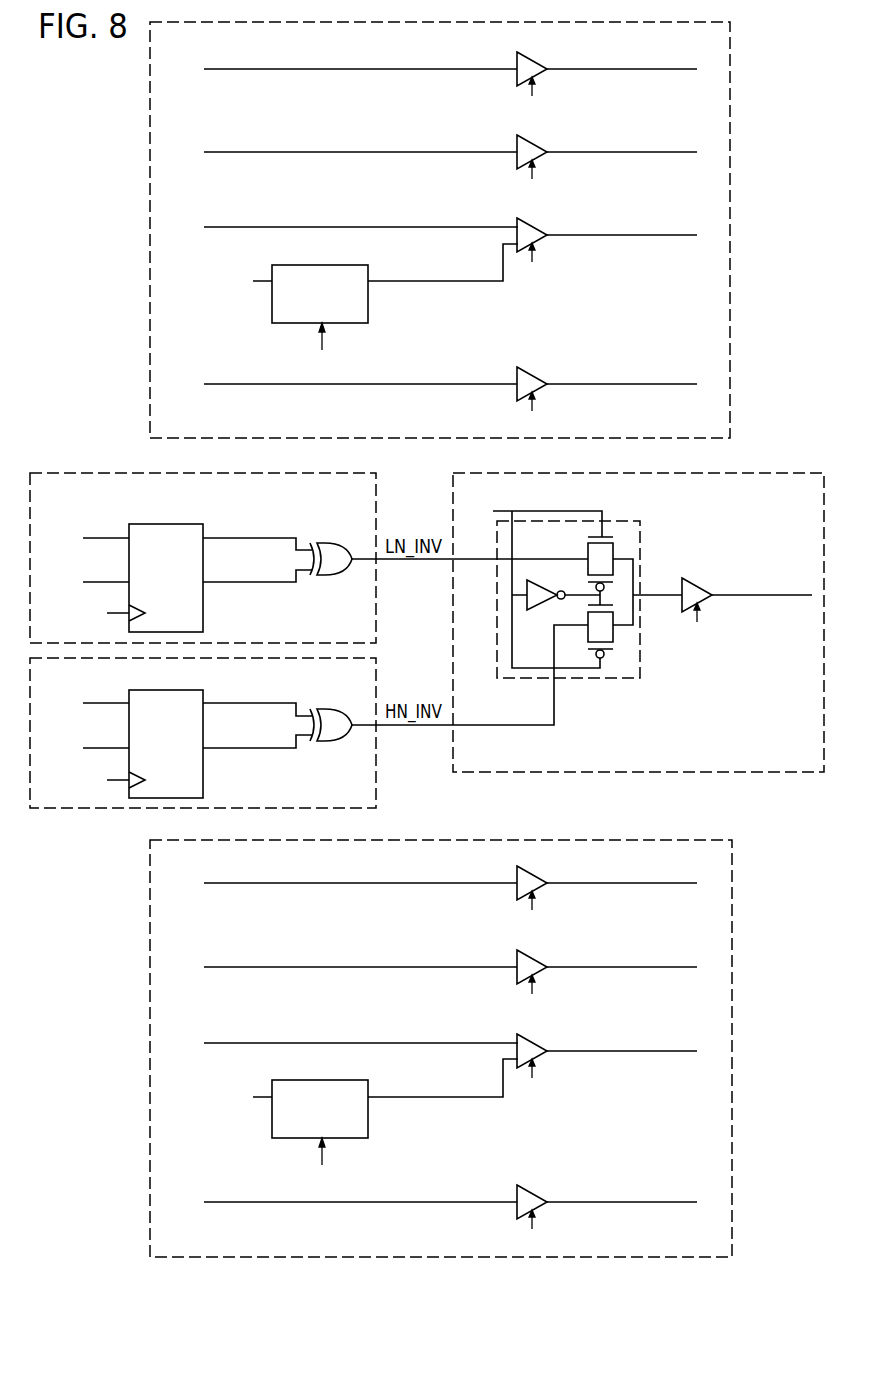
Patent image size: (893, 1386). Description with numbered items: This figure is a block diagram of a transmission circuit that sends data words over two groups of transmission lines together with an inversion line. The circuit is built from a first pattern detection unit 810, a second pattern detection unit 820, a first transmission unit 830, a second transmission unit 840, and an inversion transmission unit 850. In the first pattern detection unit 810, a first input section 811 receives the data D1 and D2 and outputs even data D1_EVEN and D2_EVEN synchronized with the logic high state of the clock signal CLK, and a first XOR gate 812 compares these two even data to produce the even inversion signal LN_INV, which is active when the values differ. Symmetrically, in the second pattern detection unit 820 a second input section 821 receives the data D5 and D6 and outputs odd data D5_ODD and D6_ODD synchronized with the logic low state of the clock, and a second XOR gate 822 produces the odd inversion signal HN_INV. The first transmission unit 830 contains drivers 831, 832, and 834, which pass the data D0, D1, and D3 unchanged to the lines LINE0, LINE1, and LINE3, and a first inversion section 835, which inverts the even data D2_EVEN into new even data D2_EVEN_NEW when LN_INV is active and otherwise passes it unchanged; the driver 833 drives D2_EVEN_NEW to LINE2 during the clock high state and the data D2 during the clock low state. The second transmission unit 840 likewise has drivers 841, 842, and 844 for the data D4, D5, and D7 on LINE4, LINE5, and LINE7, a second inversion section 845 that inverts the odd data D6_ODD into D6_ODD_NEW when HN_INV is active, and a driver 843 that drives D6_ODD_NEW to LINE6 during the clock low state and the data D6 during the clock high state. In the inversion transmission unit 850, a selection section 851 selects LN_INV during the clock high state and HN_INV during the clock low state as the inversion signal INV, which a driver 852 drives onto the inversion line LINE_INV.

The first pattern detection unit 810 is at (337, 473).
The first input section 811 is at (158, 524).
The first XOR gate 812 is at (330, 548).
The second pattern detection unit 820 is at (337, 808).
The second input section 821 is at (158, 690).
The second XOR gate 822 is at (330, 714).
The first transmission unit 830 is at (683, 22).
The driver 831 is at (532, 56).
The driver 832 is at (532, 139).
The driver 833 is at (532, 222).
The driver 834 is at (532, 371).
The first inversion section 835 is at (317, 265).
The second transmission unit 840 is at (685, 840).
The driver 841 is at (532, 870).
The driver 842 is at (532, 954).
The driver 843 is at (532, 1038).
The driver 844 is at (532, 1189).
The second inversion section 845 is at (317, 1080).
The inversion transmission unit 850 is at (782, 473).
The selection section 851 is at (622, 521).
The driver 852 is at (697, 583).